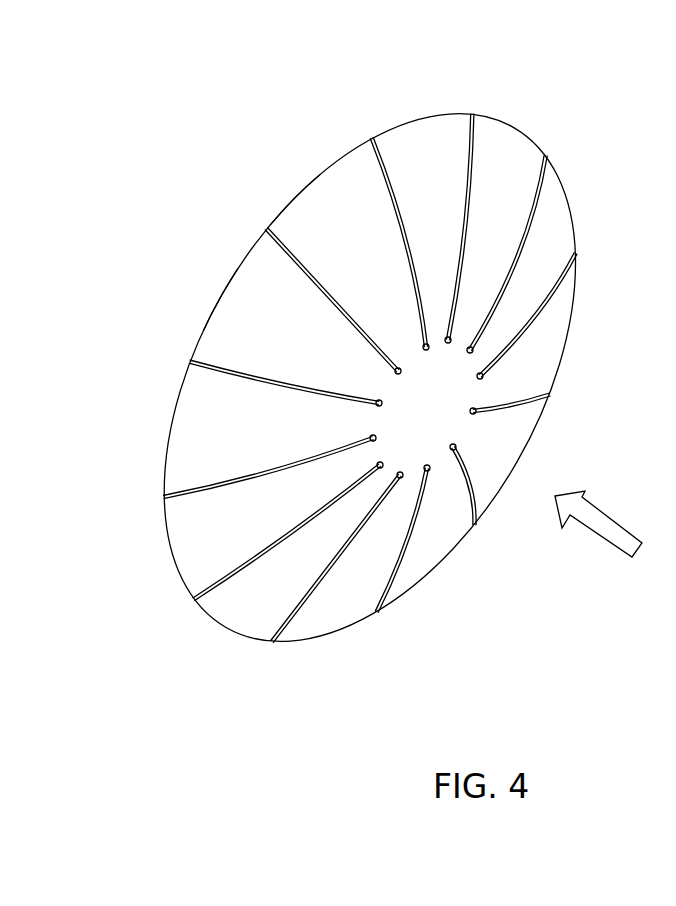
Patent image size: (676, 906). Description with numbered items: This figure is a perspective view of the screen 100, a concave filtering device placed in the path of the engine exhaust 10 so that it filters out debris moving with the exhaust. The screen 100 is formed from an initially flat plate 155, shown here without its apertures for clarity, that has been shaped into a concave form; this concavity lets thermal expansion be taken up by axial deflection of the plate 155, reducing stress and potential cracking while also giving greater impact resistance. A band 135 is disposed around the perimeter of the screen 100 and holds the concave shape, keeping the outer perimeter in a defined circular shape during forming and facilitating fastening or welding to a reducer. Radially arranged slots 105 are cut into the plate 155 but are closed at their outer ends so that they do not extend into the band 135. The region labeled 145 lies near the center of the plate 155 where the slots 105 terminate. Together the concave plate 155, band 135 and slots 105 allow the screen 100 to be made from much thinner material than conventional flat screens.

The screen 100 is at (370, 364).
The band 135 is at (293, 200).
The plate 155 is at (239, 313).
The slots 105 is at (217, 370).
The central hub region 145 is at (428, 403).
The engine exhaust 10 is at (596, 532).